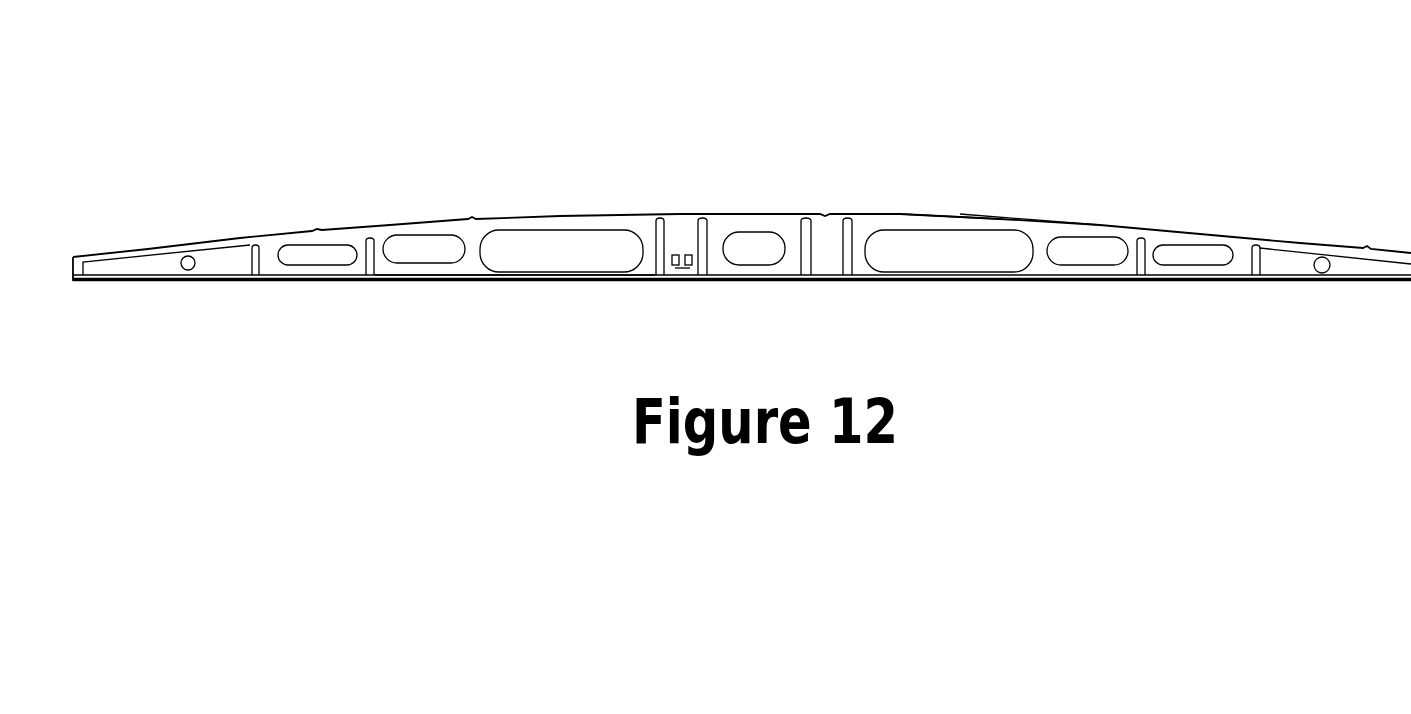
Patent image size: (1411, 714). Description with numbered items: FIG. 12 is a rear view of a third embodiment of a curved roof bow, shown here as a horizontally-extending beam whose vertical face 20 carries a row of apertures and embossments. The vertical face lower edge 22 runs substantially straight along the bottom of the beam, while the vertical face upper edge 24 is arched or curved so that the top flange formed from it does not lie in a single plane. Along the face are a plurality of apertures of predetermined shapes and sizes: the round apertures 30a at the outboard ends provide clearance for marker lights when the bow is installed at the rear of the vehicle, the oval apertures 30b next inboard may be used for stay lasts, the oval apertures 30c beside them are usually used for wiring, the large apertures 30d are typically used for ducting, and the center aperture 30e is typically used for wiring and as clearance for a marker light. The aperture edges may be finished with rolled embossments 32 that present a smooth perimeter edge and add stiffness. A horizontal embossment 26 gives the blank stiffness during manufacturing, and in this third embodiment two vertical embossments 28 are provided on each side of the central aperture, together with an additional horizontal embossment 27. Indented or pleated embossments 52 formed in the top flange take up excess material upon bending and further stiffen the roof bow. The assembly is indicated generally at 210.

The vertical face 20 is at (273, 266).
The vertical face lower edge 22 is at (1089, 298).
The vertical face upper edge 24 is at (961, 204).
The horizontal embossment 26 is at (408, 275).
The additional horizontal embossment 27 is at (1298, 250).
The vertical embossment 28 is at (660, 240).
The round aperture 30a is at (190, 258).
The oval aperture 30b is at (333, 246).
The oval aperture 30c is at (432, 240).
The large aperture 30d is at (554, 236).
The center aperture 30e is at (903, 238).
The embossment 32 is at (1193, 245).
The indented embossment 52 is at (1038, 222).
The opening 210 is at (766, 180).